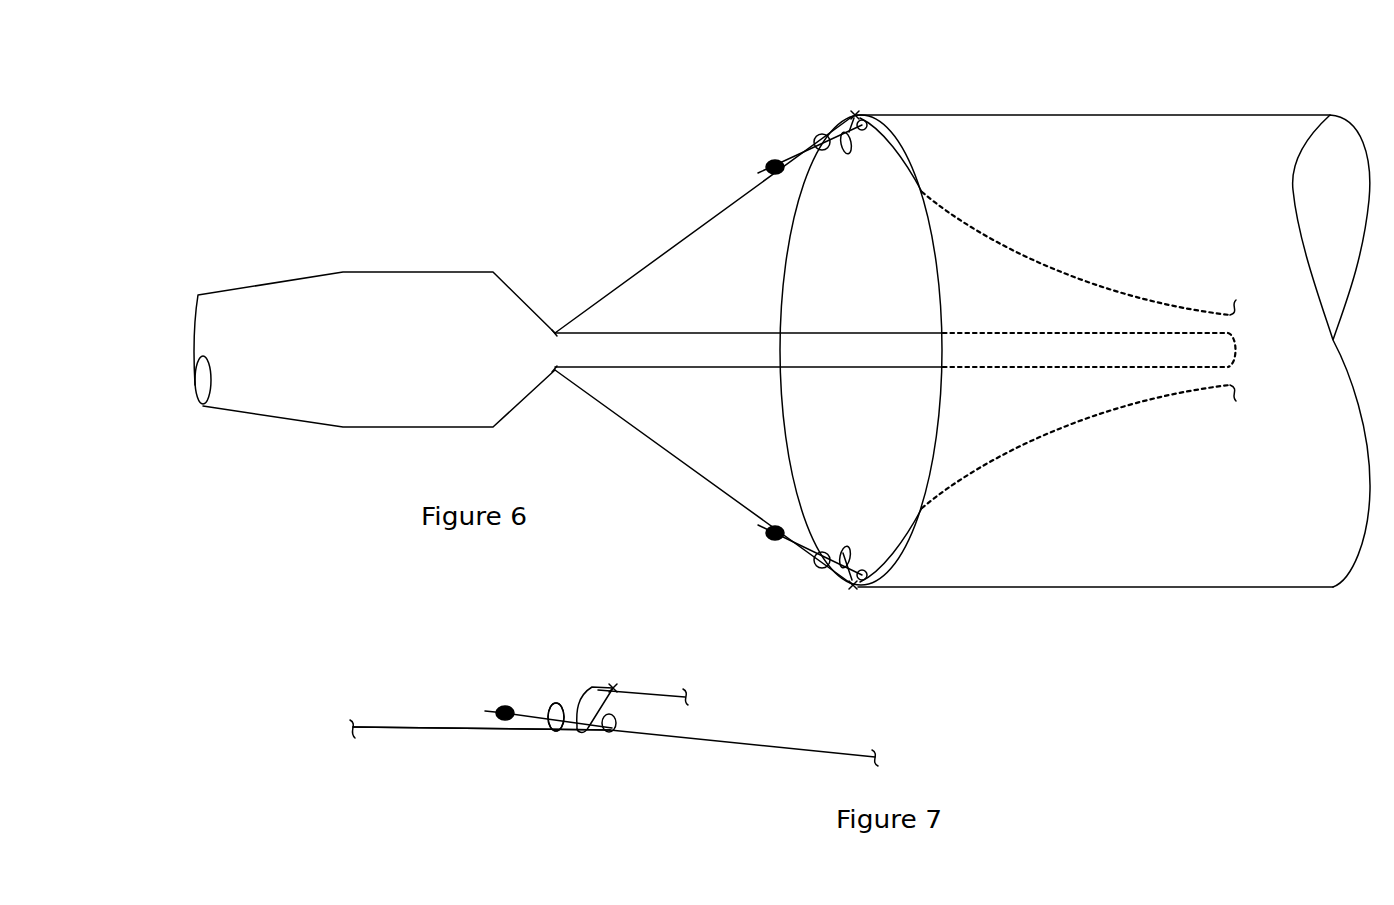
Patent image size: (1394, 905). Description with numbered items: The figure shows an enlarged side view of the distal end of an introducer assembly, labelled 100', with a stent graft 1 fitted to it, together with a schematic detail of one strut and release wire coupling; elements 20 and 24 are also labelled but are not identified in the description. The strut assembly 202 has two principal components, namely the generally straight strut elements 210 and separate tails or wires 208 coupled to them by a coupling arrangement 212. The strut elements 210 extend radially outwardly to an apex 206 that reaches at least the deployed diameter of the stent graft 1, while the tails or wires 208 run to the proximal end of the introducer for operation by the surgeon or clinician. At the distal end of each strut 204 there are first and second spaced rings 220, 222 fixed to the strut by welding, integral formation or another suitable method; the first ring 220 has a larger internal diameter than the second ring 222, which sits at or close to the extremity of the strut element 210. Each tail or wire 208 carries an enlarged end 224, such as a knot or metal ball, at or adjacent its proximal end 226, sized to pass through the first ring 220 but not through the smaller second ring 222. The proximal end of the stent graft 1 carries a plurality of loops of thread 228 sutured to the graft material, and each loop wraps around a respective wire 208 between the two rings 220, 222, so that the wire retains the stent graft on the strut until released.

In FIG. 6, the stent graft 1 is at (1090, 112).
In FIG. 7, the stent graft 1 is at (656, 690).
In FIG. 6, the handle 20 is at (403, 277).
In FIG. 6, the shaft 24 is at (616, 345).
In FIG. 6, the retrieval device 100' is at (570, 350).
In FIG. 6, the strut assembly 202 is at (800, 100).
In FIG. 6, the distal end of strut 204 is at (552, 328).
In FIG. 7, the distal end of strut 204 is at (353, 737).
In FIG. 6, the apex 206 is at (872, 110).
In FIG. 6, the tail or wire 208 is at (1105, 292).
In FIG. 7, the tail or wire 208 is at (742, 745).
In FIG. 6, the strut element 210 is at (697, 222).
In FIG. 7, the strut element 210 is at (430, 742).
In FIG. 6, the coupling arrangement 212 is at (852, 100).
In FIG. 7, the coupling arrangement 212 is at (558, 697).
In FIG. 7, the first ring 220 is at (555, 732).
In FIG. 7, the second ring 222 is at (610, 734).
In FIG. 7, the enlarged end 224 is at (505, 705).
In FIG. 7, the proximal end of wire 226 is at (485, 710).
In FIG. 6, the loops of thread 228 is at (850, 154).
In FIG. 7, the loops of thread 228 is at (617, 684).